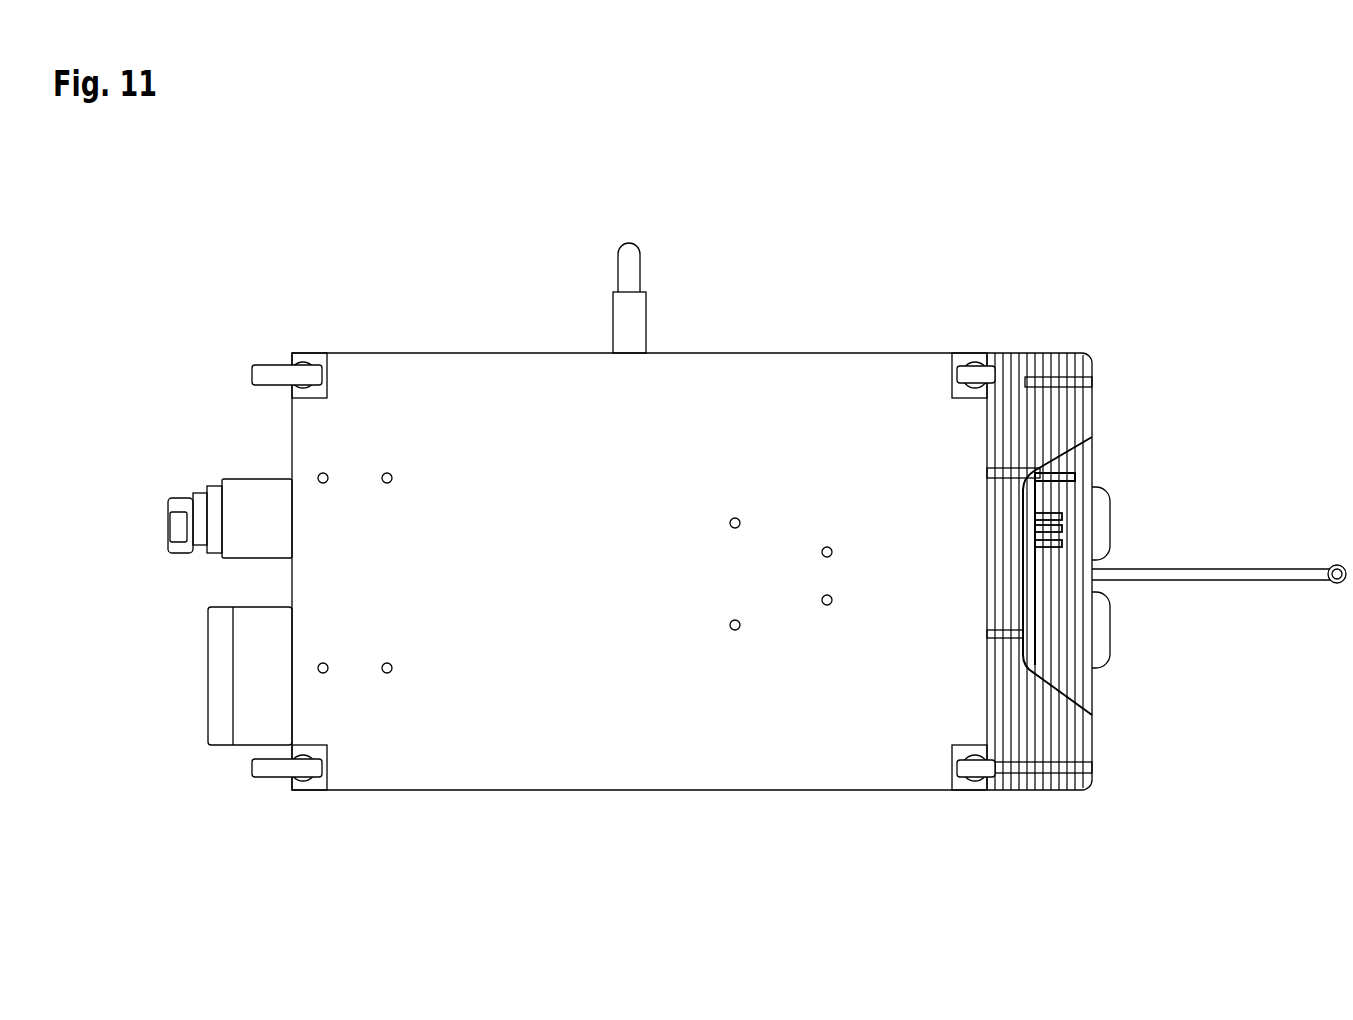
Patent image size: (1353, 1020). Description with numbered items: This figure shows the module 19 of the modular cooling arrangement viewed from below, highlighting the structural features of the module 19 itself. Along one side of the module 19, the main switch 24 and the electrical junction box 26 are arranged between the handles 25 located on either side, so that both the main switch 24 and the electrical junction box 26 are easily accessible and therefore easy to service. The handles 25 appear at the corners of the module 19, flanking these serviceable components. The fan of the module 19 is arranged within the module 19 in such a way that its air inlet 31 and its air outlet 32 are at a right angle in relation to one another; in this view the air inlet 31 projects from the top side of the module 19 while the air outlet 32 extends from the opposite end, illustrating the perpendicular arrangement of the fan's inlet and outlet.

The module 19 is at (268, 219).
The main switch 24 is at (170, 510).
The handles 25 is at (252, 374).
The electrical junction box 26 is at (208, 627).
The air inlet 31 is at (630, 273).
The air outlet 32 is at (1310, 575).